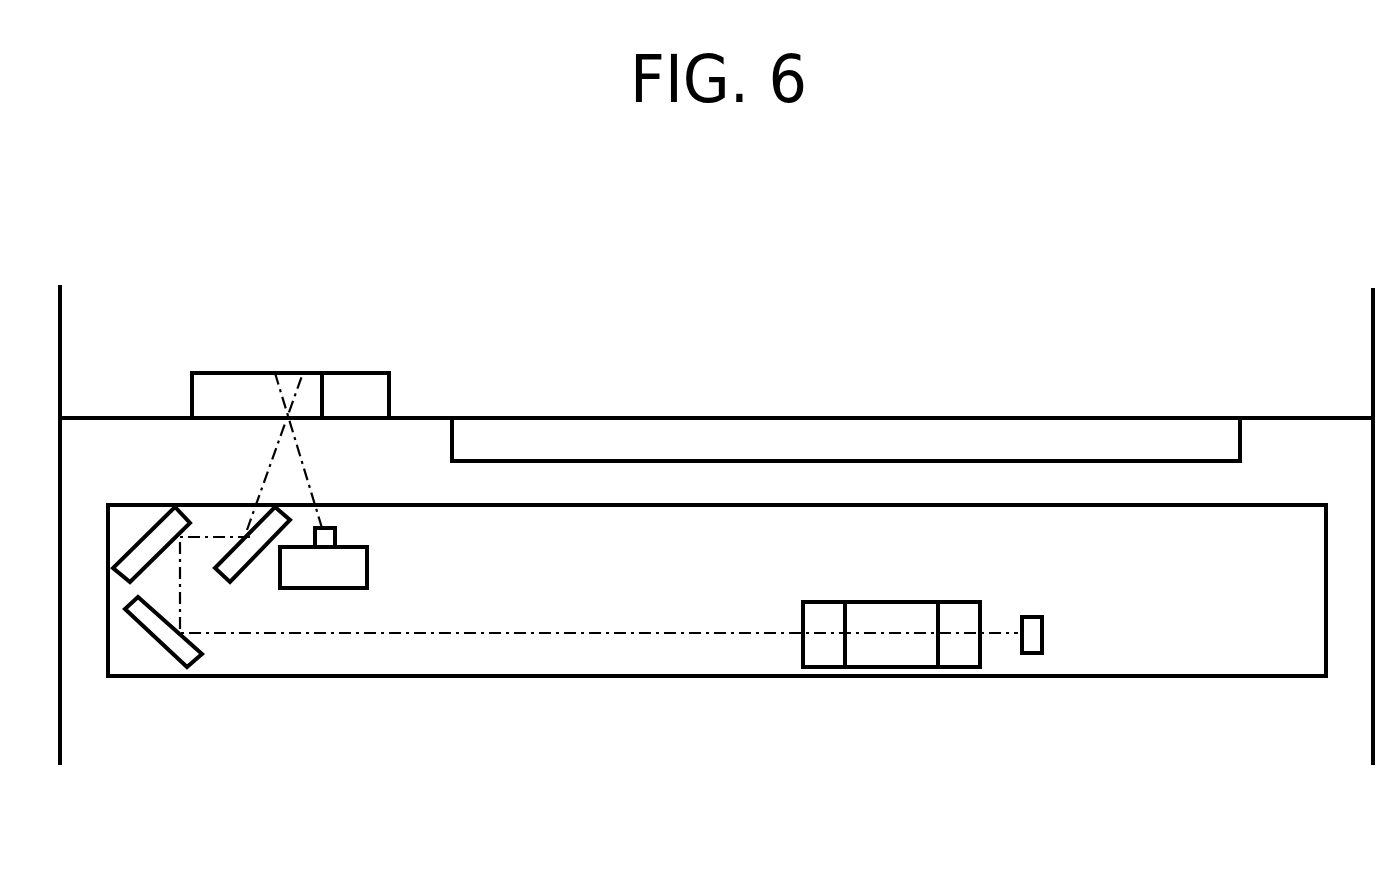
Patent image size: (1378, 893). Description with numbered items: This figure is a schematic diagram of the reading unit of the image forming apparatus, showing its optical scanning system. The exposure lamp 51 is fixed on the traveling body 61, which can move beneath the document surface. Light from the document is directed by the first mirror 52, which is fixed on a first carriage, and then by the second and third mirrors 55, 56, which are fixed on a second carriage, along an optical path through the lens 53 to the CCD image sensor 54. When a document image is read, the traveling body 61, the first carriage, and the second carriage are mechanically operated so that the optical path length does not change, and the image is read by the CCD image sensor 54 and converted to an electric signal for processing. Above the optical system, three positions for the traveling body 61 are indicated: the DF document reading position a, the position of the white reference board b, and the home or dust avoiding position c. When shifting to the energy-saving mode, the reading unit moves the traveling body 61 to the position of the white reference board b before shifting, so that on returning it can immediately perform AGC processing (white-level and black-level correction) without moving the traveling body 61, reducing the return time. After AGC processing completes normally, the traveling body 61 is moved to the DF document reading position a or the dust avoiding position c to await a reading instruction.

The exposure lamp 51 is at (336, 540).
The first mirror 52 is at (247, 568).
The lens 53 is at (894, 601).
The CCD image sensor 54 is at (1036, 616).
The second mirror 55 is at (150, 530).
The third mirror 56 is at (163, 658).
The traveling body 61 is at (370, 569).
The DF document reading position a is at (249, 372).
The white reference board b is at (360, 372).
The dust avoiding position c is at (503, 416).